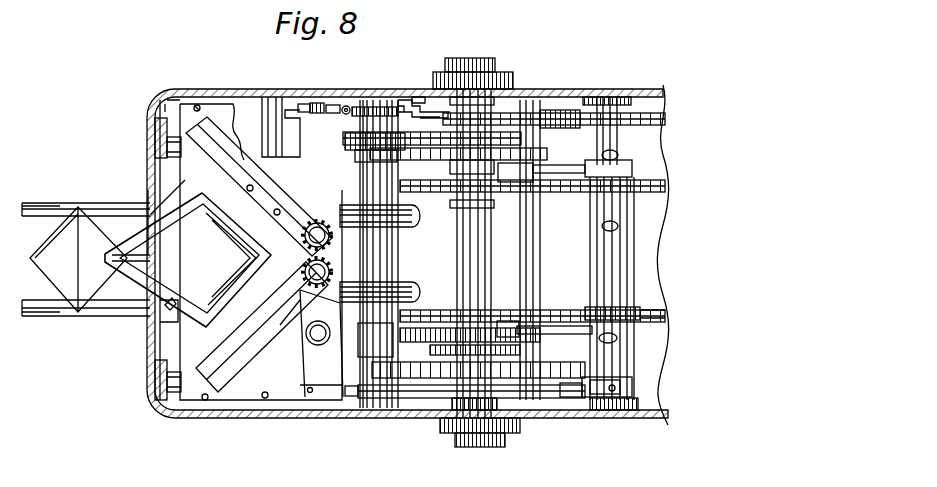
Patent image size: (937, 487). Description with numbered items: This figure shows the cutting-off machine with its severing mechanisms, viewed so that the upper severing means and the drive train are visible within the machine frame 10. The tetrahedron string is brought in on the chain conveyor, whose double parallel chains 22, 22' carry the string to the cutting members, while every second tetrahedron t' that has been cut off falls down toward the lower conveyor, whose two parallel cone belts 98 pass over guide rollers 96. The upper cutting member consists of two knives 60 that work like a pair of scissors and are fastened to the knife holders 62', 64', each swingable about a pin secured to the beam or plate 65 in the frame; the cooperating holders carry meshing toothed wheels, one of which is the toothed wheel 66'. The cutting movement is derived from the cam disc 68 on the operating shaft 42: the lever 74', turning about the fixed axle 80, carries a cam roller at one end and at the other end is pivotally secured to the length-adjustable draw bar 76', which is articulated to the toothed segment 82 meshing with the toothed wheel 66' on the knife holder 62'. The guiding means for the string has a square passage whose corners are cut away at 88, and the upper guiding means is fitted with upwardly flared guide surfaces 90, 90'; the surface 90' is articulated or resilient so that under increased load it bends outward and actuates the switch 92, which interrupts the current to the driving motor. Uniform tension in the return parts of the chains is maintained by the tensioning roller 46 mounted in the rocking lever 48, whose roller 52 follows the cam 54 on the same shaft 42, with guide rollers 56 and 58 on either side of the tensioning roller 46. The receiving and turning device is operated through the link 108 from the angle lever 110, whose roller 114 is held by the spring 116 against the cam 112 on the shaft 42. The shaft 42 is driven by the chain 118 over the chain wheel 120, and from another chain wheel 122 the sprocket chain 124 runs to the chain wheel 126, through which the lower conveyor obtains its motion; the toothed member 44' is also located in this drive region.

The machine frame 10 is at (197, 418).
The beam or plate 65 is at (186, 116).
The cutting edges or knives 60 is at (195, 145).
The cone belts 98 is at (60, 300).
The tetrahedron t' is at (78, 243).
The guide surface 90 is at (171, 251).
The guide surface 90' is at (185, 258).
The toothed wheel 66' is at (234, 259).
The cut-away corners 88 is at (148, 216).
The switch 92 is at (150, 318).
The knife holder 64' is at (259, 186).
The knife holder 62' is at (262, 327).
The toothed segment 82 is at (304, 330).
The guide rollers 96 is at (400, 232).
The chain wheel 126 is at (348, 134).
The link 108 is at (296, 120).
The spring 116 is at (316, 103).
The angle lever 110 is at (350, 104).
The sprocket chain 124 is at (402, 128).
The roller 114 is at (414, 97).
The cam 112 is at (455, 97).
The guide roller 56 is at (470, 203).
The operating shaft 42 is at (470, 405).
The cam 54 is at (527, 370).
The chain 118 is at (558, 113).
The chain wheel 120 is at (548, 112).
The chain wheel 122 is at (512, 138).
The gear bar 44' is at (458, 168).
The tensioning roller 46 is at (536, 232).
The chain 22 is at (622, 248).
The chain 22' is at (634, 339).
The guide roller 58 is at (642, 300).
The roller 52 is at (418, 330).
The rocking lever 48 is at (568, 326).
The cam disc 68 is at (432, 370).
The draw bar 76' is at (460, 419).
The fixed axle 80 is at (622, 366).
The lever 74' is at (634, 426).